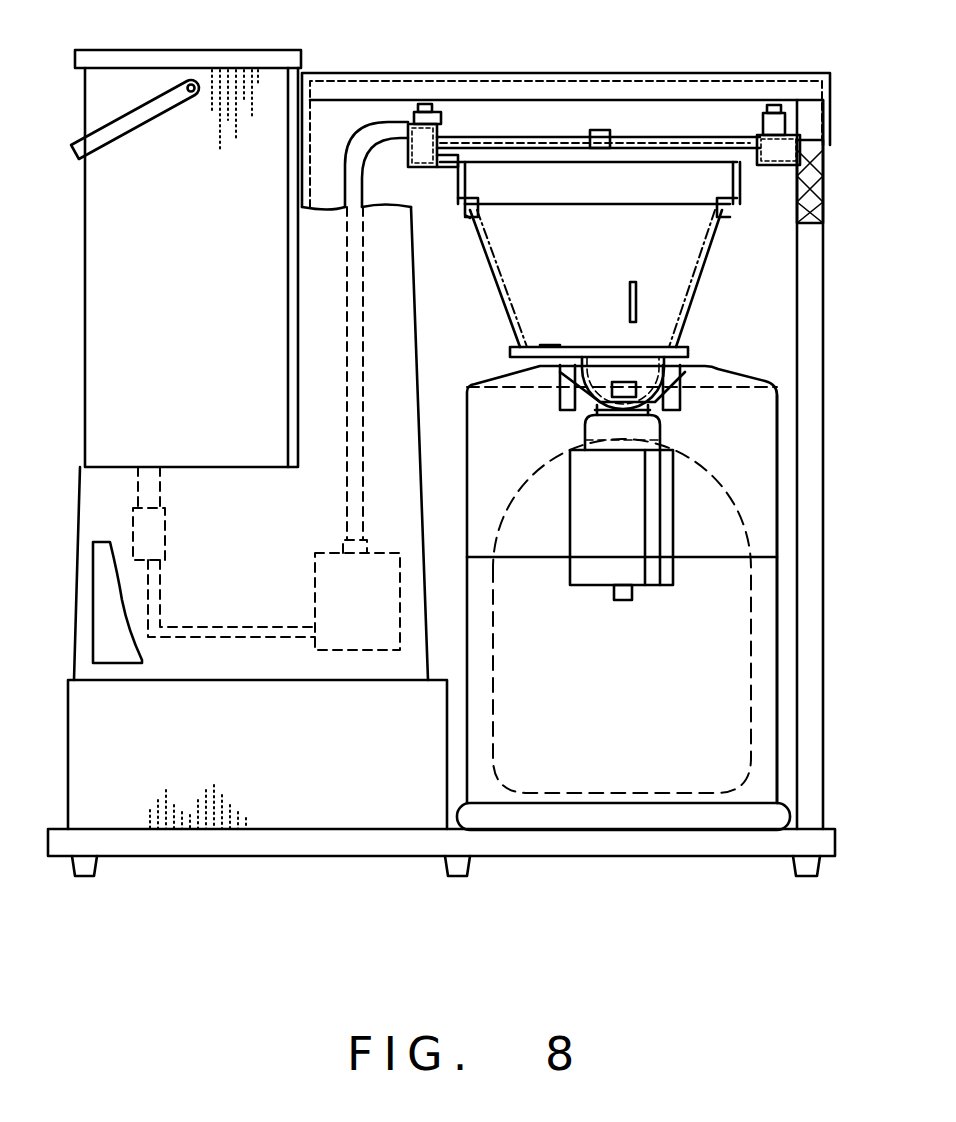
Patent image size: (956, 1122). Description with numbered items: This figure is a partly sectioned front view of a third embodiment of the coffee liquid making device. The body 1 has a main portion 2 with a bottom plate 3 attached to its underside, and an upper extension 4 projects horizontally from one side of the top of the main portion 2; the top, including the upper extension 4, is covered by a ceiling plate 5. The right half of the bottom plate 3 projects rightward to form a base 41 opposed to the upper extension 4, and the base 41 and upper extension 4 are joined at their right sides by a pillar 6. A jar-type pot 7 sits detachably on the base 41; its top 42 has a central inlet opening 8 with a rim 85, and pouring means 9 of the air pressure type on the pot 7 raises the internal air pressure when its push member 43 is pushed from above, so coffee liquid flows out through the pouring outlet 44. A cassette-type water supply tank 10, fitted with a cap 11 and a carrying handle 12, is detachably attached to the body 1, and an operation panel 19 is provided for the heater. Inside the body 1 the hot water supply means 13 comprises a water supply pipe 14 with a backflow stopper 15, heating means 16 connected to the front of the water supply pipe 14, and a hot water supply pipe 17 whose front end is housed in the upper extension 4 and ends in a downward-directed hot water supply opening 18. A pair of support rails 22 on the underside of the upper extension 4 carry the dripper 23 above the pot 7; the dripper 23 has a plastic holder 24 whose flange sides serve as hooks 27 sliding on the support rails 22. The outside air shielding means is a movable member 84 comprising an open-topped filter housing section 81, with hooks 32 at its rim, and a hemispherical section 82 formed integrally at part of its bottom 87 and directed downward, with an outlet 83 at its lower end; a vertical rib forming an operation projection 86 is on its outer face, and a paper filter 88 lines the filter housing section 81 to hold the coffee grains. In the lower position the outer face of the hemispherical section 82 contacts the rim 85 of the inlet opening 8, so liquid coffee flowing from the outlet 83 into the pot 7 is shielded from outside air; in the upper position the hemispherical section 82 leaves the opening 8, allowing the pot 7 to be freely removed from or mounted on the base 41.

The body 1 is at (64, 690).
The main portion 2 is at (405, 452).
The bottom plate 3 is at (268, 843).
The upper extension 4 is at (830, 118).
The ceiling plate 5 is at (640, 75).
The pillar 6 is at (808, 630).
The pot 7 is at (780, 515).
The inlet opening 8 is at (575, 395).
The pouring means 9 is at (592, 520).
The water supply tank 10 is at (88, 303).
The cap 11 is at (180, 50).
The handle 12 is at (120, 130).
The hot water supply means 13 is at (302, 655).
The water supply pipe 14 is at (235, 630).
The backflow stopper 15 is at (160, 530).
The heating means 16 is at (353, 635).
The hot water supply pipe 17 is at (378, 120).
The hot water supply opening 18 is at (600, 150).
The operation panel 19 is at (98, 598).
The support rails 22 is at (425, 167).
The dripper 23 is at (468, 222).
The holder 24 is at (698, 170).
The hooks 27 is at (450, 125).
The hooks 32 is at (478, 205).
The base 41 is at (660, 843).
The top 42 is at (745, 372).
The push member 43 is at (625, 428).
The pouring outlet 44 is at (633, 595).
The filter housing section 81 is at (495, 302).
The hemispherical section 82 is at (650, 372).
The outlet 83 is at (620, 382).
The movable member 84 is at (705, 295).
The rim 85 is at (690, 367).
The operation projection 86 is at (630, 300).
The bottom 87 is at (546, 345).
The paper filter 88 is at (702, 262).